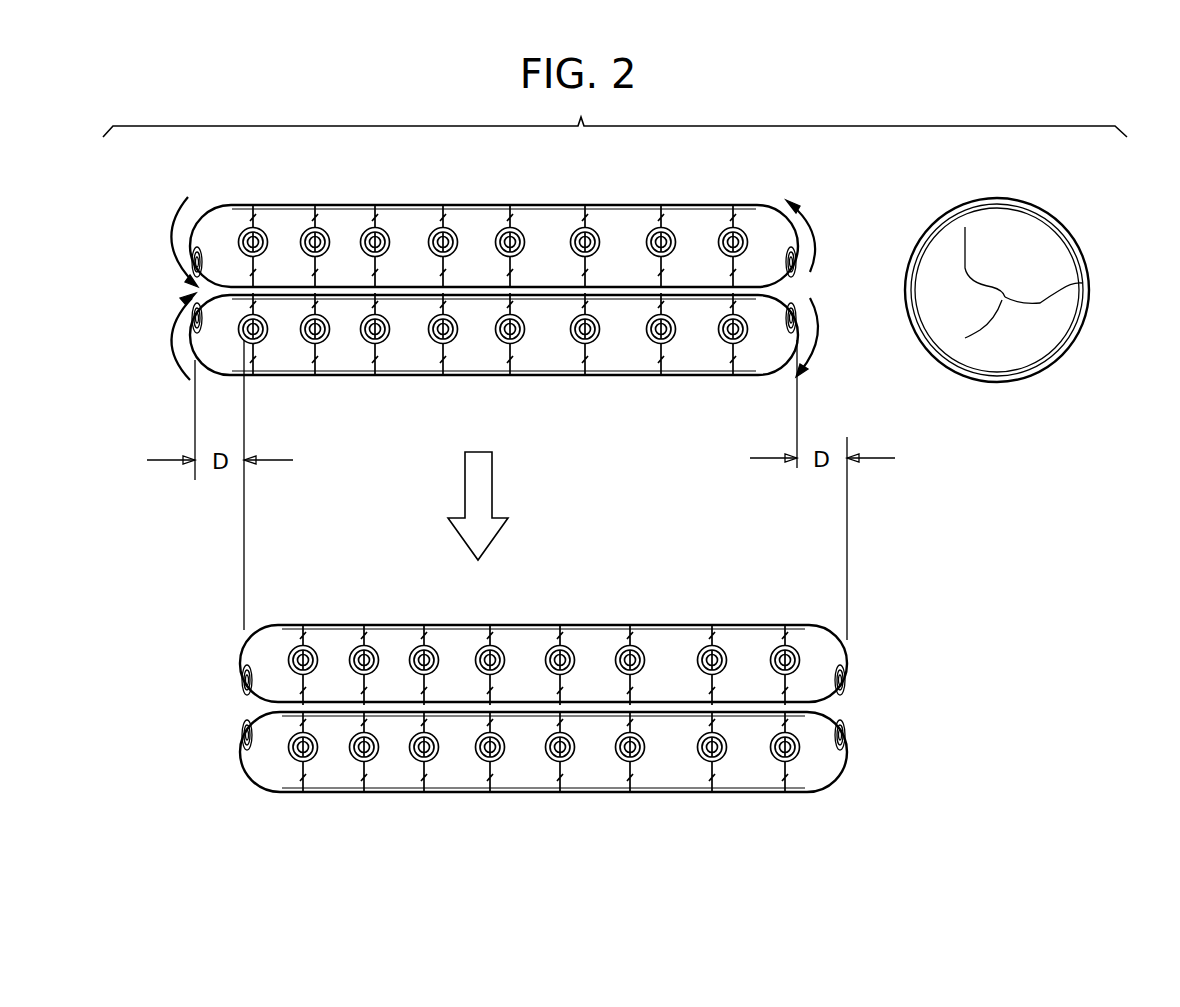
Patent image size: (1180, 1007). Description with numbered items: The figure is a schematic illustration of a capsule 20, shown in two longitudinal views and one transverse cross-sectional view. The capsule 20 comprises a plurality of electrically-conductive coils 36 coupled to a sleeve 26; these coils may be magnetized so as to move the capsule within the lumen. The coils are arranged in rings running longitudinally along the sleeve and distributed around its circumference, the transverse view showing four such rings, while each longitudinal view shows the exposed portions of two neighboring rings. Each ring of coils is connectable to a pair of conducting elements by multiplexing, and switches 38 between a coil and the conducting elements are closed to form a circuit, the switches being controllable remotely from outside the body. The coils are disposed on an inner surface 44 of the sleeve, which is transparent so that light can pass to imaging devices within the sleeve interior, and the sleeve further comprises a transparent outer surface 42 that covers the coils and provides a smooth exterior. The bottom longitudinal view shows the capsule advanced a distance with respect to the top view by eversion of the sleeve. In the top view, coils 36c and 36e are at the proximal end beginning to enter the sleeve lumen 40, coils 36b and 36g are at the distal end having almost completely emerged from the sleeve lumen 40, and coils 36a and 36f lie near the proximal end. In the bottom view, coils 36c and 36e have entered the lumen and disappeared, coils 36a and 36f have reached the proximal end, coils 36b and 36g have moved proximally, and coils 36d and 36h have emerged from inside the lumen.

The capsule 20 is at (728, 184).
The sleeve 26 is at (622, 213).
The electrically-conductive coils 36 is at (390, 215).
The coil 36a is at (250, 215).
The coil 36b is at (801, 243).
The coil 36c is at (191, 252).
The coil 36d is at (849, 684).
The coil 36e is at (188, 318).
The coil 36f is at (256, 342).
The coil 36g is at (801, 326).
The coil 36h is at (849, 726).
The switches 38 is at (318, 215).
The sleeve lumen 40 is at (1080, 290).
The outer surface 42 is at (989, 200).
The surface 44 is at (1000, 210).